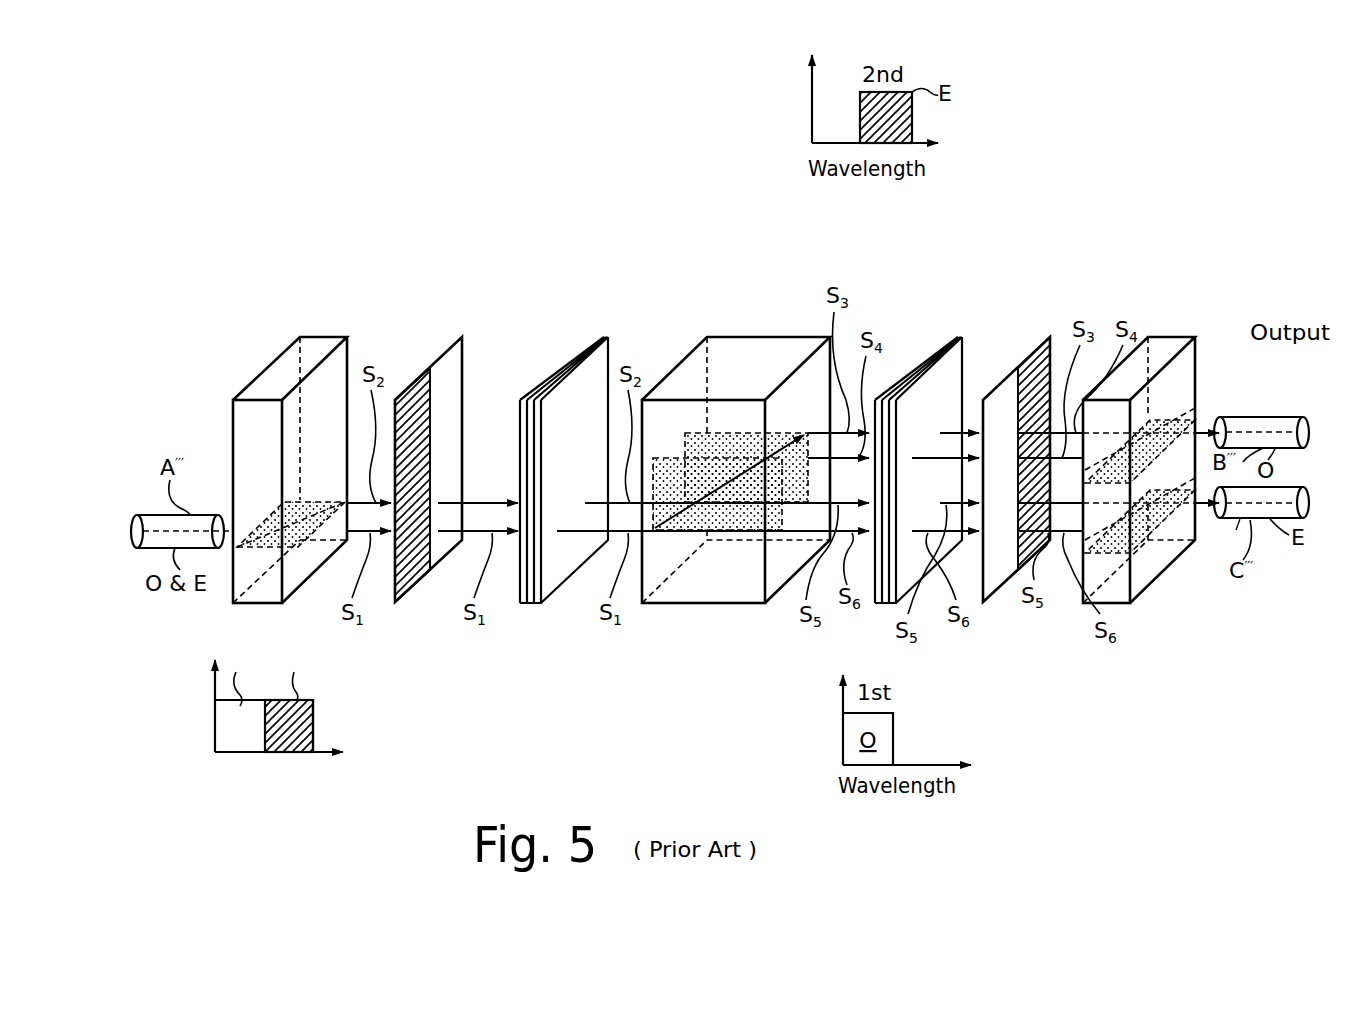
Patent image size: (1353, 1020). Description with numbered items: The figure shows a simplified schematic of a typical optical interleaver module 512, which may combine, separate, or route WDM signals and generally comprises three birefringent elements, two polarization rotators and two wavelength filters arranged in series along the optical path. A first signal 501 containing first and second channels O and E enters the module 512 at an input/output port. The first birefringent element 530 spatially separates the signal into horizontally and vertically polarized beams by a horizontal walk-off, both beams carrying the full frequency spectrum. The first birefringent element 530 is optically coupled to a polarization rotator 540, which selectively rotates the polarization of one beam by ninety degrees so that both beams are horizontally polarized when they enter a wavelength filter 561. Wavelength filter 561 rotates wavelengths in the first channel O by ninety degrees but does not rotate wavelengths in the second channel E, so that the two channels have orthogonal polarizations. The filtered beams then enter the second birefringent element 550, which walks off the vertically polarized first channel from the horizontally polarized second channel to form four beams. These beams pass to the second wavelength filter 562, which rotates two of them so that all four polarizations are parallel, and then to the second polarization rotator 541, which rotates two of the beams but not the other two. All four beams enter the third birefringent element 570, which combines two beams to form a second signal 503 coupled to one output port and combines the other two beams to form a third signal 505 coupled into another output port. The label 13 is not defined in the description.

The optical interleaver module 512 is at (458, 148).
The first birefringent element 530 is at (276, 360).
The polarization rotator 540 is at (455, 352).
The wavelength filter 561 is at (620, 345).
The second birefringent element 550 is at (748, 336).
The second wavelength filter 562 is at (928, 366).
The second polarization rotator 541 is at (1032, 365).
The third birefringent element 570 is at (1176, 346).
The second signal 503 is at (1233, 425).
The third signal 505 is at (1278, 492).
The first signal 501 is at (253, 718).
The output beam label 13 is at (1228, 533).